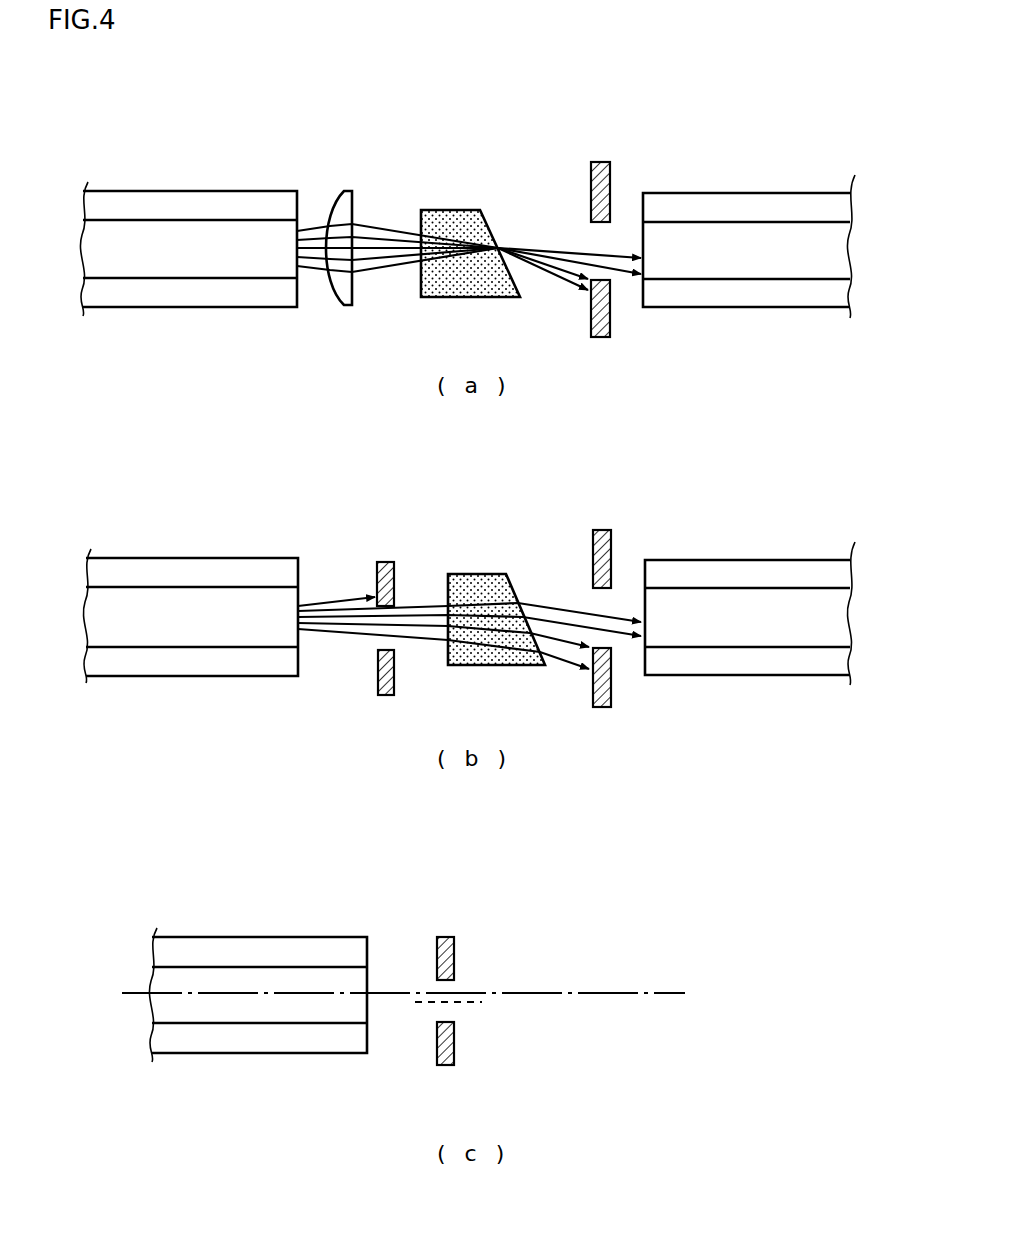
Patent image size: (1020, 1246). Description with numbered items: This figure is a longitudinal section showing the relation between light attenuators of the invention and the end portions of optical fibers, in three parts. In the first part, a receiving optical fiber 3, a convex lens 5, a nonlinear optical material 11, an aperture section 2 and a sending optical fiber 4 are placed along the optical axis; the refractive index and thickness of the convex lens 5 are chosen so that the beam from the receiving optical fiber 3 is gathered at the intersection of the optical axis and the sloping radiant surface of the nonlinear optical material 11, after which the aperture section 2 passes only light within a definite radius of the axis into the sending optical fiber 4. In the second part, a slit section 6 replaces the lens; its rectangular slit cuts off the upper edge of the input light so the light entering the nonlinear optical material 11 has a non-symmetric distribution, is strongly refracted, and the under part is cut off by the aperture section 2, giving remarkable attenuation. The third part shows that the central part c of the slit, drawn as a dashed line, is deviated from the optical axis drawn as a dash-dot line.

The receiving optical fiber 3 is at (172, 191).
The convex lens 5 is at (345, 190).
The nonlinear optical material 11 is at (452, 209).
The aperture section 2 is at (600, 161).
The sending optical fiber 4 is at (710, 192).
The slit section 6 is at (388, 561).
The central part of the slit c is at (447, 1003).